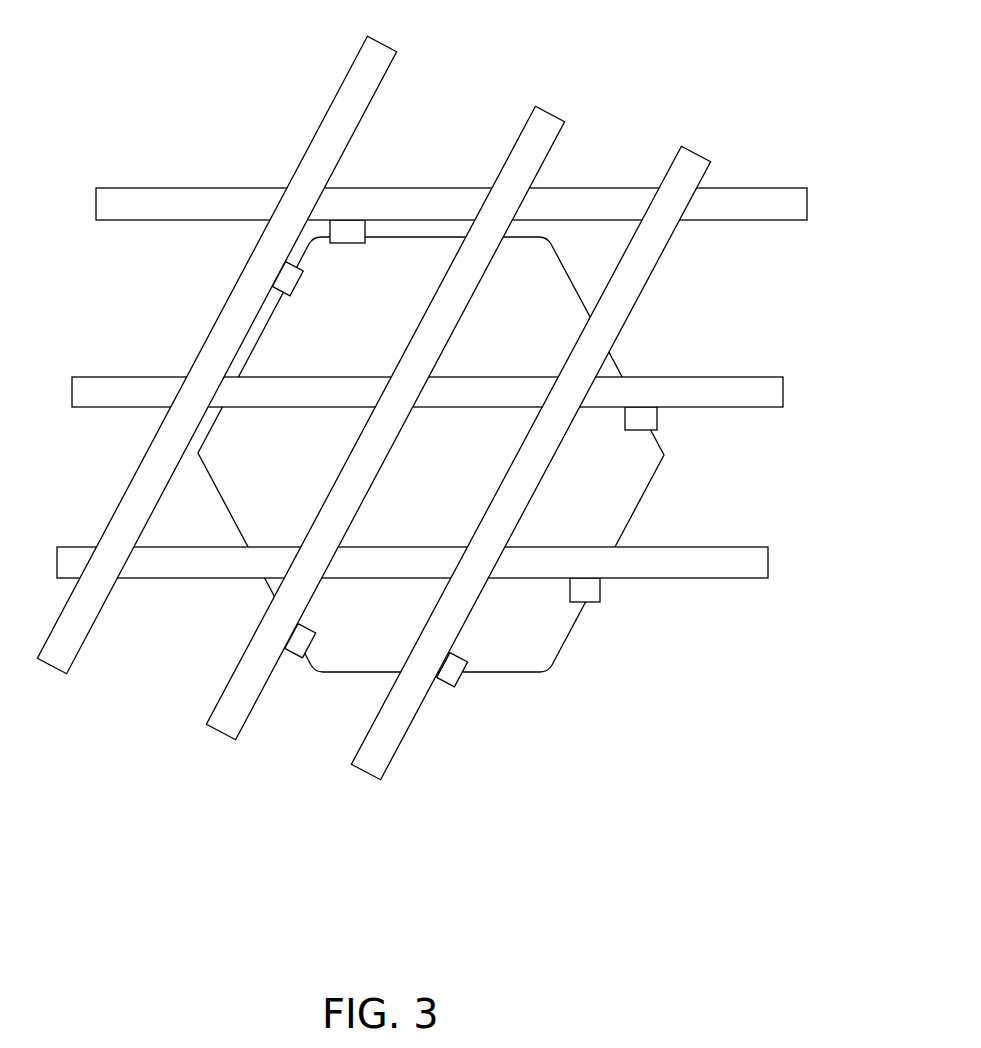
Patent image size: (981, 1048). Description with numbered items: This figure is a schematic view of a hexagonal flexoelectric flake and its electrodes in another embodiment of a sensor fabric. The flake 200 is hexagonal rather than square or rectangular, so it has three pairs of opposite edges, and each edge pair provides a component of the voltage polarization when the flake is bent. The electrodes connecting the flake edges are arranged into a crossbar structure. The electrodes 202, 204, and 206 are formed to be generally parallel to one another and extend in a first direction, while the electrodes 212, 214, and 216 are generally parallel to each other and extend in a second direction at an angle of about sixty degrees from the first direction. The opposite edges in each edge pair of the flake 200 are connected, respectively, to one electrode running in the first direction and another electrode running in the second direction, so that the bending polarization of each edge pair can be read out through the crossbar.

The flake 200 is at (545, 642).
The electrode 202 is at (382, 57).
The electrode 204 is at (562, 127).
The electrode 206 is at (708, 163).
The electrode 212 is at (717, 548).
The electrode 214 is at (728, 393).
The electrode 216 is at (767, 188).